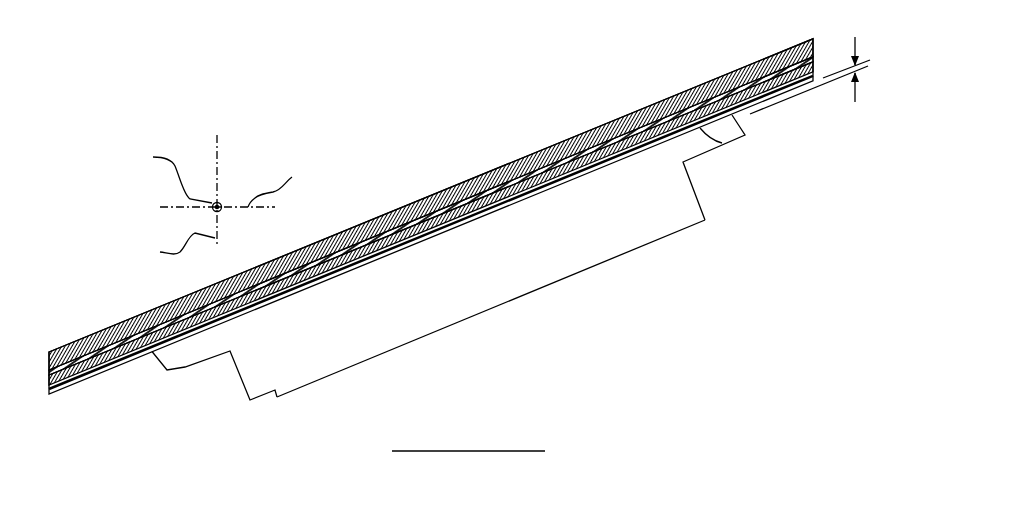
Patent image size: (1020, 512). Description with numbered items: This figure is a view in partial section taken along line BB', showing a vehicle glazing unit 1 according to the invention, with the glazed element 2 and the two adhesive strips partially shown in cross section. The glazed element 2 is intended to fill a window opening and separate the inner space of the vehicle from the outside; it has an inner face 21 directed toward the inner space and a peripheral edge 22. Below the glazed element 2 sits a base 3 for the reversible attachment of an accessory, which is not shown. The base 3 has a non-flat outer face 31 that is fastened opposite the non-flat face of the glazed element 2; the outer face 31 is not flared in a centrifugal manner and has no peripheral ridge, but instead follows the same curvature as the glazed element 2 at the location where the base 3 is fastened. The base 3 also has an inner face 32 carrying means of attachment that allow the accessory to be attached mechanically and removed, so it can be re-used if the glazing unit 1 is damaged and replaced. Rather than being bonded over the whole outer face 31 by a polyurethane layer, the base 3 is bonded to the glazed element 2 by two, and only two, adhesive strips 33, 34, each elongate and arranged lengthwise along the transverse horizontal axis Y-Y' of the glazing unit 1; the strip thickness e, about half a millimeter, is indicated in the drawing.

The glazing unit 1 is at (166, 81).
The glazed element 2 is at (362, 235).
The inner face 21 is at (580, 135).
The peripheral edge 22 is at (695, 105).
The base 3 is at (333, 373).
The outer face 31 is at (653, 150).
The inner face 32 is at (620, 262).
The adhesive strip 33 is at (740, 138).
The adhesive strip 34 is at (149, 356).